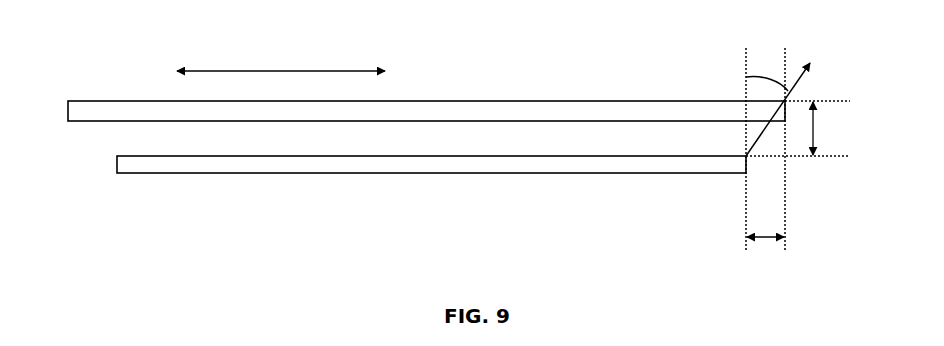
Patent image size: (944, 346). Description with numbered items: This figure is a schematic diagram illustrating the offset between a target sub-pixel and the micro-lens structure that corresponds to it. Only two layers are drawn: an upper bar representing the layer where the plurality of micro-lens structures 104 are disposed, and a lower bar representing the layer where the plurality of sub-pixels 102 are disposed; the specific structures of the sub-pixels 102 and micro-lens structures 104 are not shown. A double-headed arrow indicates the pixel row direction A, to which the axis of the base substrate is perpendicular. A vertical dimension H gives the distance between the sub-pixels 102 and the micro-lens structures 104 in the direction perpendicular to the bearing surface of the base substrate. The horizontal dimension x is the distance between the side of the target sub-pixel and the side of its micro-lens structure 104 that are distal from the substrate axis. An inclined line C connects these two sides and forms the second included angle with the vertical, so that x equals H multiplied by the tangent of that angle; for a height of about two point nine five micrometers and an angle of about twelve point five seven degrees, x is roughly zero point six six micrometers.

The micro-lens structure 104 is at (503, 110).
The sub-pixel 102 is at (478, 163).
The pixel row direction A is at (293, 71).
The bent edge line C is at (743, 88).
The distance between sub-pixels and micro-lens structures H is at (825, 128).
The distance between distal sides of target sub-pixel and micro-lens structure x is at (765, 219).